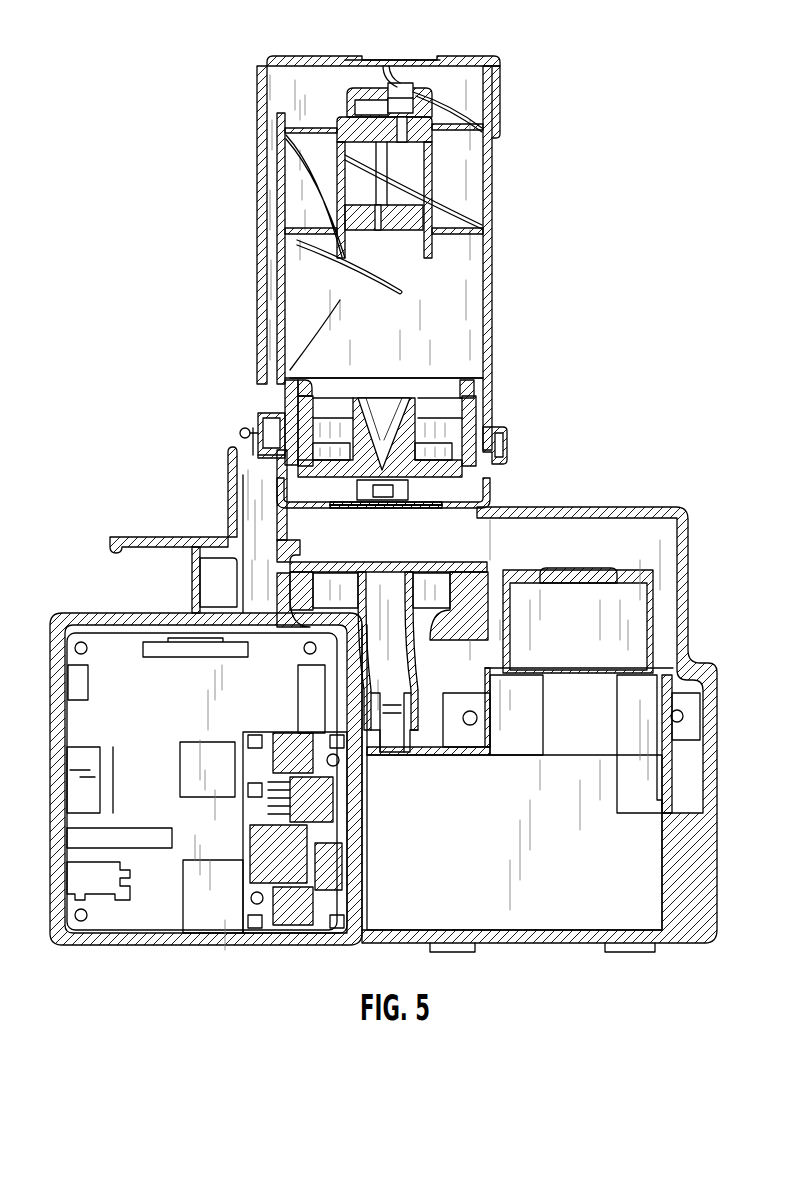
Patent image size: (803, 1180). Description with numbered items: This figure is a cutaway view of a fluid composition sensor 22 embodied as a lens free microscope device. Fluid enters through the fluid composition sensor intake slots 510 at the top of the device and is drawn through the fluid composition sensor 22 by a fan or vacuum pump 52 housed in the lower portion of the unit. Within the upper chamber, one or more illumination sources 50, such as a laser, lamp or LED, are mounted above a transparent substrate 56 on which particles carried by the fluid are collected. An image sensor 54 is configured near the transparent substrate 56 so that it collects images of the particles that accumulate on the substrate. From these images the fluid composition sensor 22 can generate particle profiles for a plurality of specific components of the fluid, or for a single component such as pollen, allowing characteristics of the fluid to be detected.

The fluid composition sensor intake slots 510 is at (345, 31).
The fluid composition sensor 22 is at (549, 259).
The illumination source 50 is at (412, 103).
The fan or vacuum pump 52 is at (576, 905).
The image sensor 54 is at (395, 492).
The transparent substrate 56 is at (380, 475).